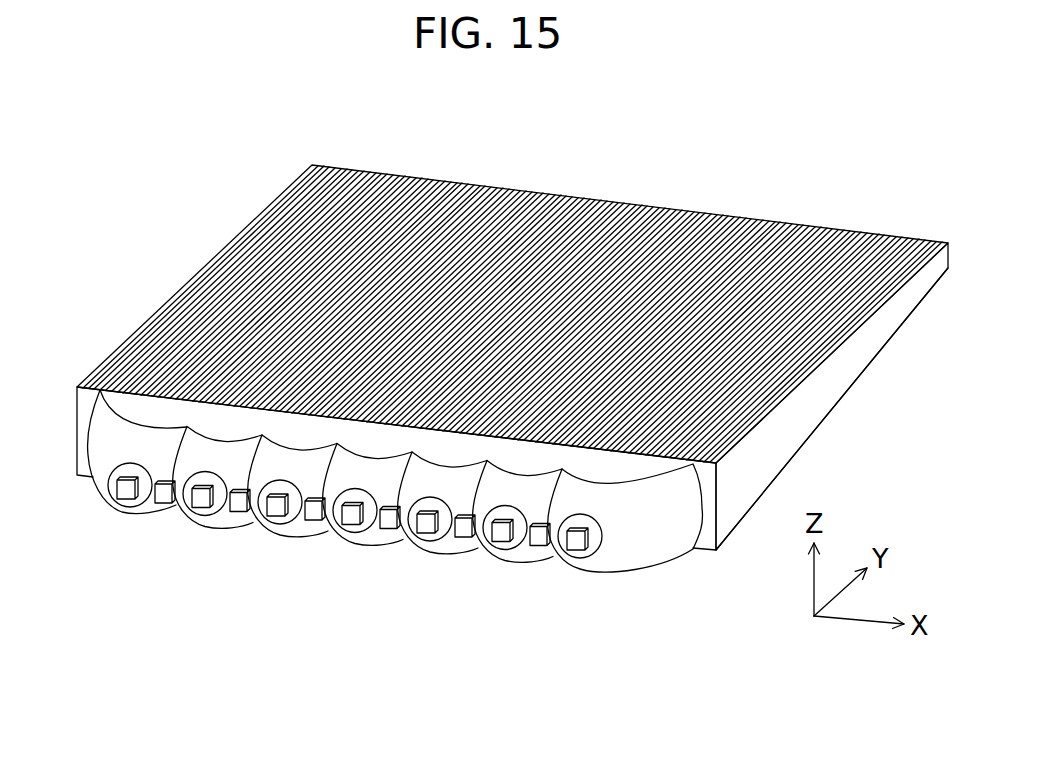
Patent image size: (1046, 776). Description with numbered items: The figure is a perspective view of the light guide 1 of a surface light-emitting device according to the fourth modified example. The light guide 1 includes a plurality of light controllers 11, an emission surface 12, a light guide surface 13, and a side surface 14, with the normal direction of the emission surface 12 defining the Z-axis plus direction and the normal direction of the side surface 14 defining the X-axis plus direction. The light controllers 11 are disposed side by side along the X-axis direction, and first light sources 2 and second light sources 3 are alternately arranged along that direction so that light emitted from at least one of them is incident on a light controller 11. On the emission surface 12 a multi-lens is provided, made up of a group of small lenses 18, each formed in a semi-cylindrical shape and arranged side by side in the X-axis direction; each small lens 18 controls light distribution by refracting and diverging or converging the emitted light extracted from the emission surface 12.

The light guide 1 is at (695, 198).
The first light source 2 is at (126, 497).
The second light source 3 is at (160, 503).
The light controller 11 is at (134, 524).
The emission surface 12 is at (803, 233).
The light guide surface 13 is at (790, 460).
The side surface 14 is at (838, 380).
The small lens 18 is at (467, 190).